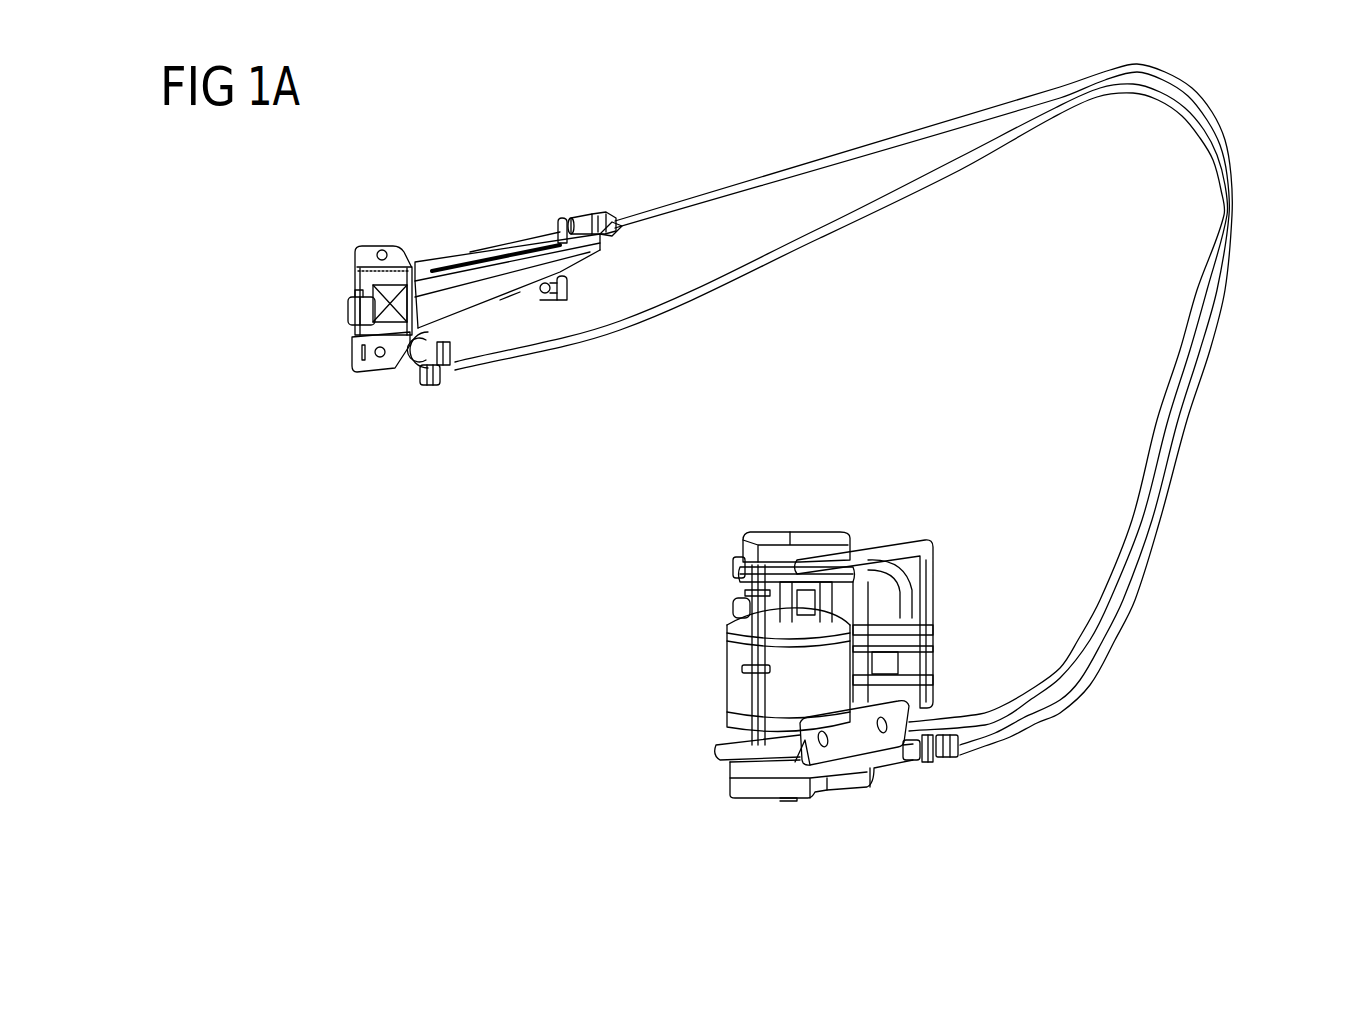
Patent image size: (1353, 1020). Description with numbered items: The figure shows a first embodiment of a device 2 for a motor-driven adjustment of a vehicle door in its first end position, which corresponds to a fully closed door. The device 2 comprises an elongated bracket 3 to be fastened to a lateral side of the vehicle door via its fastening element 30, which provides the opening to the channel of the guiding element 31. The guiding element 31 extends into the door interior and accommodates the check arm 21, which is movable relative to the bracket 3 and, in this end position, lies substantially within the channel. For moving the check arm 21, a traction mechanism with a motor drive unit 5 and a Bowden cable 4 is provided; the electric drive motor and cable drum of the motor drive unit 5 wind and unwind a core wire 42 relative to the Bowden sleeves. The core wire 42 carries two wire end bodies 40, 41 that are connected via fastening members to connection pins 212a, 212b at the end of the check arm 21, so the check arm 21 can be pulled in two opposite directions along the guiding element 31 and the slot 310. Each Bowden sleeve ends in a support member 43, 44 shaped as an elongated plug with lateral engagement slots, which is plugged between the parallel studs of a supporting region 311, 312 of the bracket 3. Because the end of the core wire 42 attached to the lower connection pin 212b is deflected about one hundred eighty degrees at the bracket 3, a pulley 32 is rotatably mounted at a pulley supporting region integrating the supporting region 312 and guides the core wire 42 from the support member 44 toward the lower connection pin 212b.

The device 2 is at (405, 527).
The bracket 3 is at (433, 262).
The Bowden cable 4 is at (1115, 128).
The motor drive unit 5 is at (955, 535).
The check arm 21 is at (348, 315).
The fastening element 30 is at (366, 250).
The guiding element 31 is at (523, 240).
The pulley 32 is at (397, 370).
The first wire end body 40 is at (585, 225).
The second wire end body 41 is at (548, 300).
The core wire 42 is at (510, 296).
The support member 43 is at (610, 225).
The support member 44 is at (413, 380).
The connection pin 212a is at (563, 220).
The lower connection pin 212b is at (570, 287).
The slot 310 is at (488, 252).
The supporting region 311 is at (627, 227).
The supporting region 312 is at (430, 386).